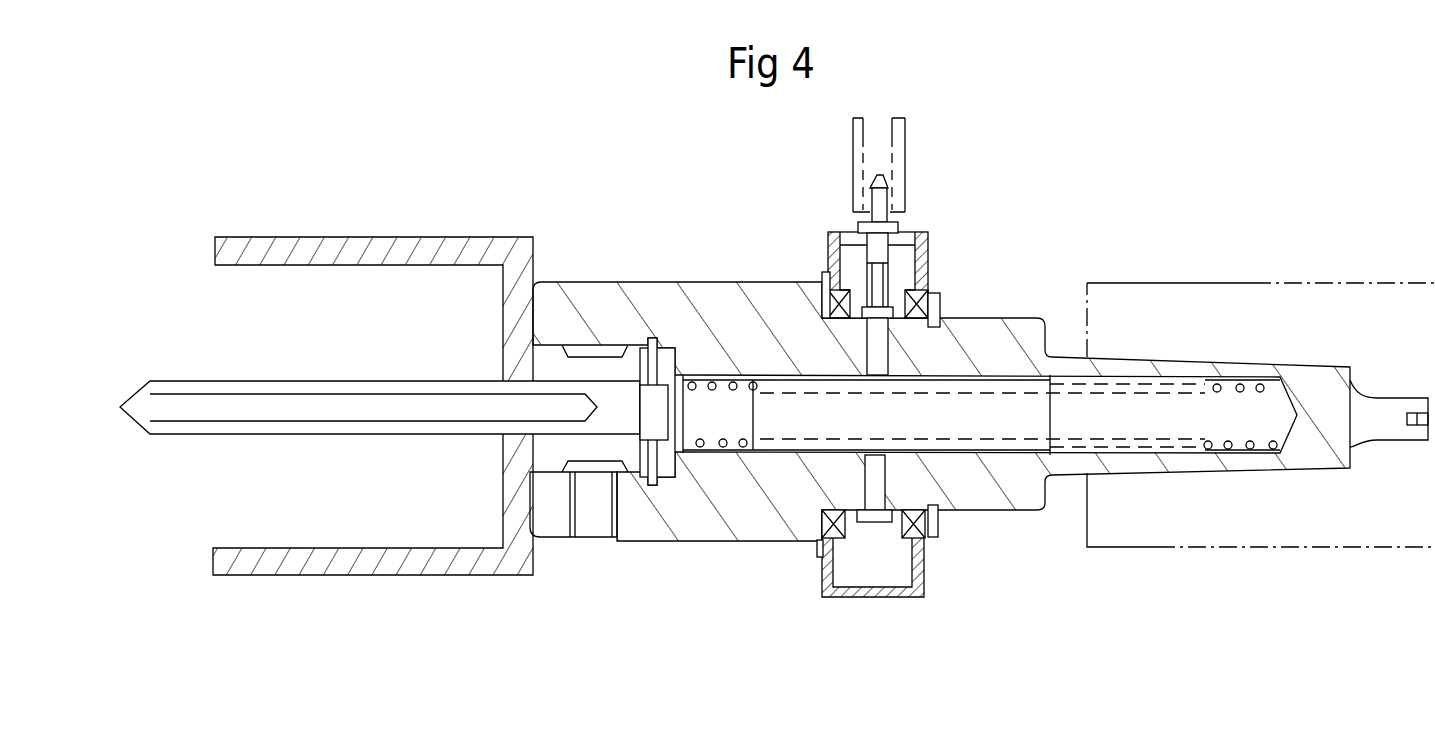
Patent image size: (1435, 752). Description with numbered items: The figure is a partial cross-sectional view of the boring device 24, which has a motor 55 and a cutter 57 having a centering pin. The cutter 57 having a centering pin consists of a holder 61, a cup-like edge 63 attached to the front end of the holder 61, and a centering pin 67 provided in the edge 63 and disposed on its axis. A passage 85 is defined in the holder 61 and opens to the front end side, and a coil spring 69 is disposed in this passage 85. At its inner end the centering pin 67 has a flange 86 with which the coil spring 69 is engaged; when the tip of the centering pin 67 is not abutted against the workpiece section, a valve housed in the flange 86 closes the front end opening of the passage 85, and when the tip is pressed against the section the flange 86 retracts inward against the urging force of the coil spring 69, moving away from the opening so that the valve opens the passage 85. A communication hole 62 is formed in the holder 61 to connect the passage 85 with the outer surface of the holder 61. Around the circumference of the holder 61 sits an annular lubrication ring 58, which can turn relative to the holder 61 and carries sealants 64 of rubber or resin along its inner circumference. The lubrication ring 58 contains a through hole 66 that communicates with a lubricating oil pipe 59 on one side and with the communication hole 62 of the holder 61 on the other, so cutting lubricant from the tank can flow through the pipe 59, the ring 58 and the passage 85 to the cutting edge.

The boring device 24 is at (1090, 217).
The motor 55 is at (1210, 532).
The cutter having a centering pin 57 is at (617, 558).
The lubrication ring 58 is at (910, 232).
The lubricating oil pipe 59 is at (855, 145).
The holder 61 is at (690, 282).
The communication hole 62 is at (877, 352).
The cup-like edge 63 is at (383, 253).
The sealants 64 is at (828, 272).
The through hole 66 is at (880, 277).
The centering pin 67 is at (367, 424).
The coil spring 69 is at (743, 453).
The passage 85 is at (1130, 385).
The flange 86 is at (680, 462).